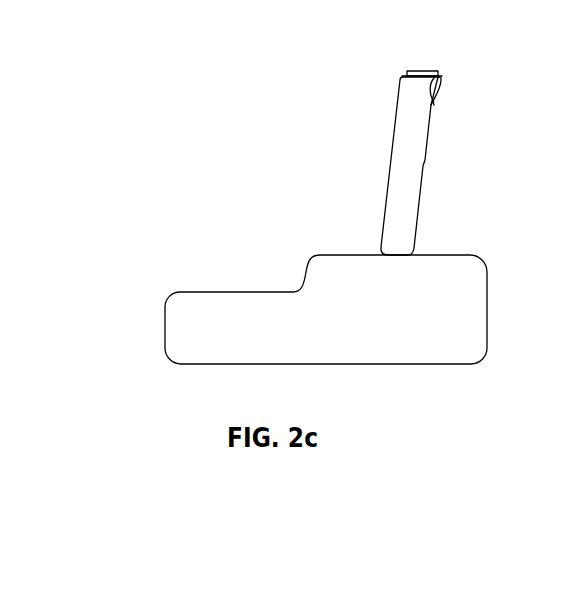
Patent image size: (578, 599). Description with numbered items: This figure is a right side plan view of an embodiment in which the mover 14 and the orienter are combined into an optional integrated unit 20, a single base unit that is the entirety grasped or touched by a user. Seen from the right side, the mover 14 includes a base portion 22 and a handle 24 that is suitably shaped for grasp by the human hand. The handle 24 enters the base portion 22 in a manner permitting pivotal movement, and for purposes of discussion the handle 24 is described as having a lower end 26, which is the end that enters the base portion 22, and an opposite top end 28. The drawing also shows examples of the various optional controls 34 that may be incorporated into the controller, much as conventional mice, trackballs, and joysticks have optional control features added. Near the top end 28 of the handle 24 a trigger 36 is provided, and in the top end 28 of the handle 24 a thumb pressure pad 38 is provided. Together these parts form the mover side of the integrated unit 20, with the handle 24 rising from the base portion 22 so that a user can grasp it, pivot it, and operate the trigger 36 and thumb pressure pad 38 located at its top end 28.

The mover 14 is at (254, 232).
The integrated unit 20 is at (232, 338).
The base portion 22 is at (470, 307).
The handle 24 is at (407, 182).
The lower end 26 is at (397, 236).
The top end 28 is at (415, 90).
The optional controls 34 is at (438, 71).
The trigger 36 is at (437, 100).
The thumb pressure pad 38 is at (415, 70).